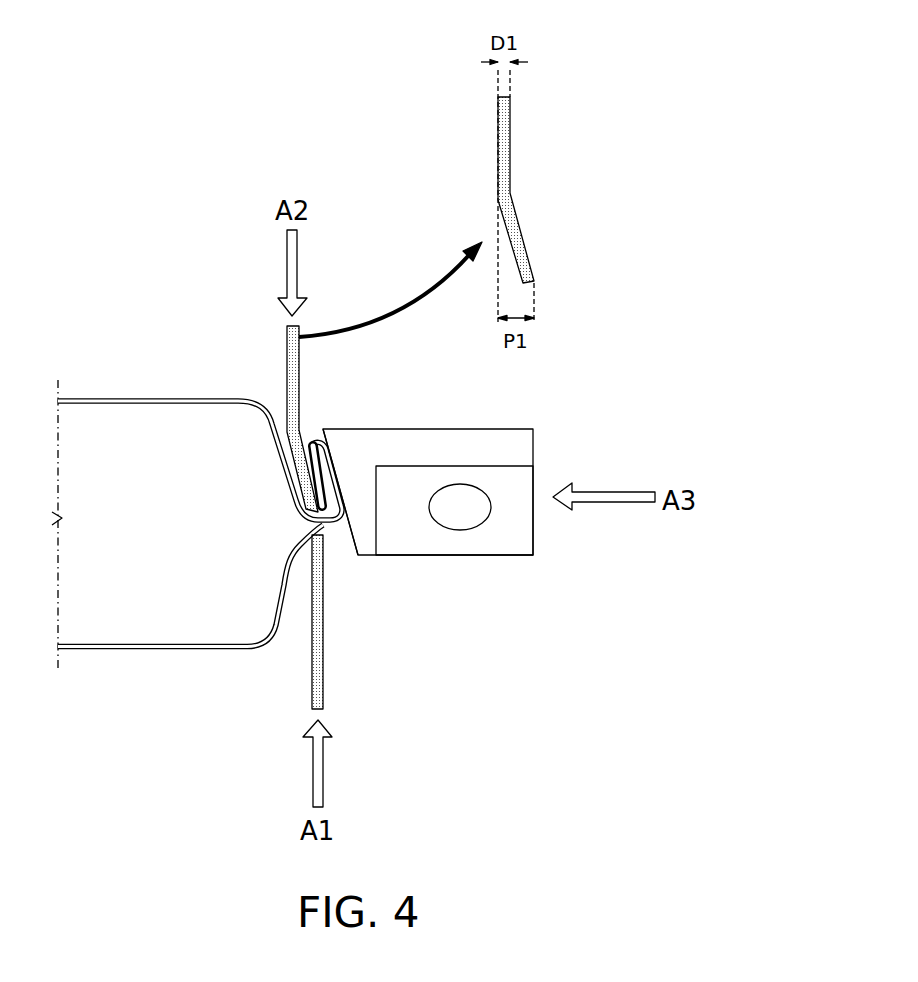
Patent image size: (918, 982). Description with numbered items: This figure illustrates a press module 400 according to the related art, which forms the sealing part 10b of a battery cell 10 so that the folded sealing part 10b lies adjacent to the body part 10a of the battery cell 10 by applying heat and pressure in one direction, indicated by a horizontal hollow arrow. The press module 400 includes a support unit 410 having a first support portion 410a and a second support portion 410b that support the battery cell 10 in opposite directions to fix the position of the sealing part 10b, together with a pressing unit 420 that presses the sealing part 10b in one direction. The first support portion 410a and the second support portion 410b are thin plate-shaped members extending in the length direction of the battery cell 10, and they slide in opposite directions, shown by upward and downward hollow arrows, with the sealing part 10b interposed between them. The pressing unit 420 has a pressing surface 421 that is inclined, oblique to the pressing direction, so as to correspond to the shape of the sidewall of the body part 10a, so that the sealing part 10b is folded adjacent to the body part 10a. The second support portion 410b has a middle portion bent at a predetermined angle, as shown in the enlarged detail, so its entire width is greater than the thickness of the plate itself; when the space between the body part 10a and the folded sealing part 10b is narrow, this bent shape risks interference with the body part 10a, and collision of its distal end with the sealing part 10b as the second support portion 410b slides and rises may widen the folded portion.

The battery cell 10 is at (119, 390).
The body part 10a is at (123, 628).
The sealing part 10b is at (311, 431).
The press module 400 is at (423, 474).
The support unit 410 is at (423, 474).
The first support portion 410a is at (312, 677).
The second support portion 410b is at (286, 353).
The pressing unit 420 is at (467, 440).
The pressing surface 421 is at (352, 543).